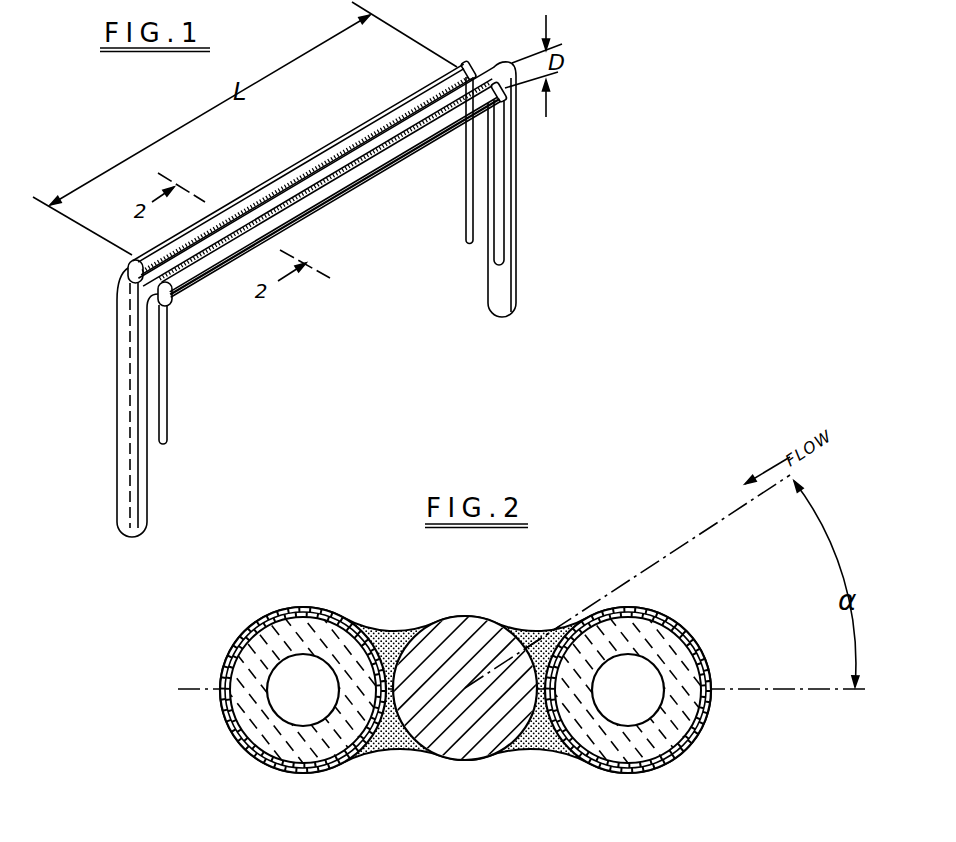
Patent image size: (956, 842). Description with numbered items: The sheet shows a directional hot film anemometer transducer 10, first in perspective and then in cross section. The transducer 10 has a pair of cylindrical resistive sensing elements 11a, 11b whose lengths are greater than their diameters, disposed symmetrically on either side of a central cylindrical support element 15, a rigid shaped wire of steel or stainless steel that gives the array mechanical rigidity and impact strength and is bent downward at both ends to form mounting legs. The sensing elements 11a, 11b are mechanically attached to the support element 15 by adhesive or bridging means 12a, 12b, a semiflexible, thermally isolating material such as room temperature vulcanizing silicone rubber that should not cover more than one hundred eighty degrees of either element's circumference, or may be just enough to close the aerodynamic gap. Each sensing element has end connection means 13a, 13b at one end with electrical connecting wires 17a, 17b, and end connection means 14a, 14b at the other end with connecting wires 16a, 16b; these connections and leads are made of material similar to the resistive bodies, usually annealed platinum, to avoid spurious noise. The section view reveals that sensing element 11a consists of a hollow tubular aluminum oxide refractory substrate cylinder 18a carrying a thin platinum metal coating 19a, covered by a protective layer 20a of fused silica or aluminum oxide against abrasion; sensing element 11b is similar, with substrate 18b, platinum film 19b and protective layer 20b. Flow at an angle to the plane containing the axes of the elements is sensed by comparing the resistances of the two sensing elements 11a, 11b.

In FIG. 1, the directional hot film anemometer transducer 10 is at (367, 198).
In FIG. 2, the directional hot film anemometer transducer 10 is at (430, 759).
In FIG. 1, the cylindrical sensing element 11a is at (338, 145).
In FIG. 2, the cylindrical sensing element 11a is at (222, 666).
In FIG. 1, the cylindrical sensing element 11b is at (190, 273).
In FIG. 2, the cylindrical sensing element 11b is at (714, 686).
In FIG. 1, the adhesive or bridging means 12a is at (267, 195).
In FIG. 2, the adhesive or bridging means 12a is at (397, 628).
In FIG. 1, the adhesive or bridging means 12b is at (410, 127).
In FIG. 2, the adhesive or bridging means 12b is at (542, 626).
In FIG. 1, the end connection means 13a is at (128, 268).
In FIG. 1, the end connection means 13b is at (169, 306).
In FIG. 1, the end connection means 14a is at (471, 62).
In FIG. 1, the end connection means 14b is at (505, 99).
In FIG. 1, the central cylindrical support element 15 is at (519, 299).
In FIG. 2, the central cylindrical support element 15 is at (468, 626).
In FIG. 1, the connecting wire 16a is at (465, 221).
In FIG. 1, the connecting wire 16b is at (504, 240).
In FIG. 1, the electrical connecting wire 17a is at (135, 388).
In FIG. 1, the electrical connecting wire 17b is at (168, 428).
In FIG. 2, the tubular aluminum oxide refractory substrate cylinder 18a is at (260, 645).
In FIG. 2, the tubular refractory substrate cylinder 18b is at (690, 664).
In FIG. 2, the platinum metal coating 19a is at (272, 619).
In FIG. 2, the platinum metal coating 19b is at (678, 632).
In FIG. 2, the protective coating layer 20a is at (320, 607).
In FIG. 2, the protective coating layer 20b is at (650, 609).